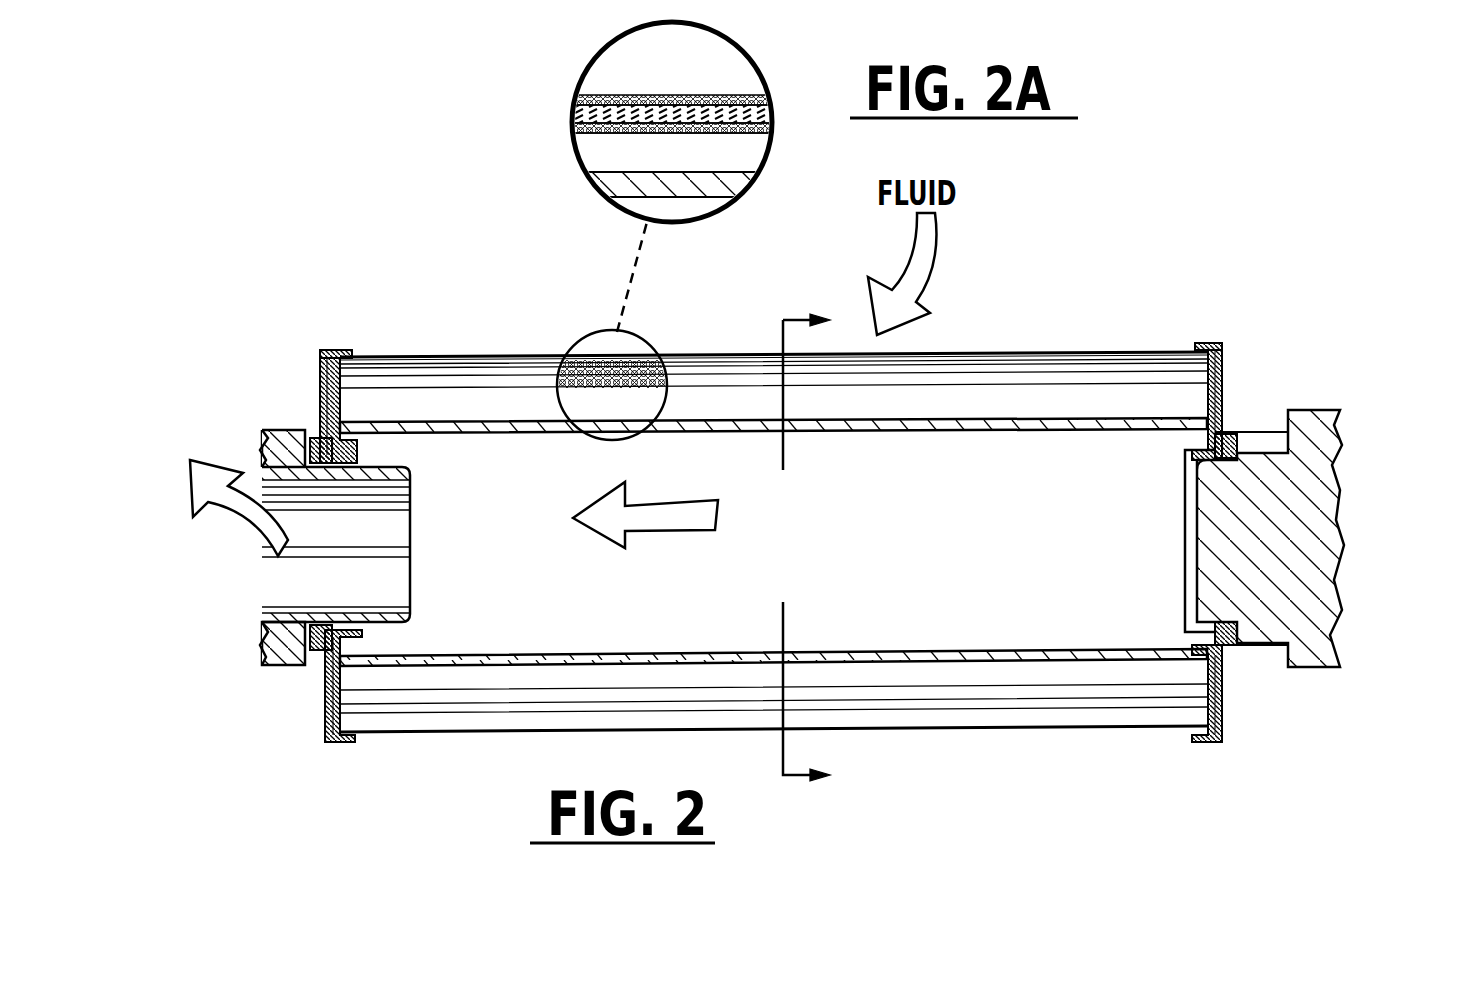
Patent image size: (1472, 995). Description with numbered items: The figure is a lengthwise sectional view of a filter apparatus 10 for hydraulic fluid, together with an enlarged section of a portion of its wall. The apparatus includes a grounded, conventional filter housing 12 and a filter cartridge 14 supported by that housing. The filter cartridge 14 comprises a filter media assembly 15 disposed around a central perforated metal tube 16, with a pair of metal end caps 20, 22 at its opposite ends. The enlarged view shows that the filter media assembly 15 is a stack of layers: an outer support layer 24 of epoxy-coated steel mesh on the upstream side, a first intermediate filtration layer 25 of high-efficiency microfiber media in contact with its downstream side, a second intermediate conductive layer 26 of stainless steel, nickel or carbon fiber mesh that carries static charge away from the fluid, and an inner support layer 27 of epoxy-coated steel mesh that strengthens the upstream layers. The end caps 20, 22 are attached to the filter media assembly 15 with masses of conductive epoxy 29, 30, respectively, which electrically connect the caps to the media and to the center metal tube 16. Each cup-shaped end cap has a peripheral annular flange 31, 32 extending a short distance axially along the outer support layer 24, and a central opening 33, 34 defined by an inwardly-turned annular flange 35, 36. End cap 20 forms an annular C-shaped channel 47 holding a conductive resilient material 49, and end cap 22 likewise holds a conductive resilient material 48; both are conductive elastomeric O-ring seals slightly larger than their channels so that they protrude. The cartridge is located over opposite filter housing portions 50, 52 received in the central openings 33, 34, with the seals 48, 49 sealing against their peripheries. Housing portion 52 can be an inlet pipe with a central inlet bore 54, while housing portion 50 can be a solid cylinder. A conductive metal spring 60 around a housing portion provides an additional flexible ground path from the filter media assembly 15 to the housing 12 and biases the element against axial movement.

In FIG. 2, the filter apparatus 10 is at (1018, 287).
In FIG. 2, the filter housing 12 is at (1355, 640).
In FIG. 2, the filter cartridge 14 is at (533, 354).
In FIG. 2, the filter media assembly 15 is at (735, 354).
In FIG. 2, the central perforated metal tube 16 is at (845, 432).
In FIG. 2A, the central perforated metal tube 16 is at (690, 185).
In FIG. 2, the end cap 20 is at (1224, 358).
In FIG. 2, the end cap 22 is at (322, 352).
In FIG. 2A, the outer support layer 24 is at (600, 97).
In FIG. 2A, the first intermediate filtration layer 25 is at (768, 103).
In FIG. 2A, the second intermediate conductive layer 26 is at (585, 130).
In FIG. 2A, the inner support layer 27 is at (712, 130).
In FIG. 2, the conductive epoxy 29 is at (1195, 397).
In FIG. 2, the conductive epoxy 30 is at (340, 395).
In FIG. 2, the peripheral annular flange 31 is at (1195, 350).
In FIG. 2, the peripheral annular flange 32 is at (342, 354).
In FIG. 2, the central opening 33 is at (1183, 570).
In FIG. 2, the central opening 34 is at (370, 630).
In FIG. 2, the inwardly-turned annular flange 35 is at (1224, 440).
In FIG. 2, the inwardly-turned annular flange 36 is at (352, 440).
In FIG. 2, the annular channel 47 is at (1205, 642).
In FIG. 2, the conductive resilient material 48 is at (322, 633).
In FIG. 2, the conductive resilient material 49 is at (1218, 466).
In FIG. 2, the filter housing portion 50 is at (1345, 505).
In FIG. 2, the filter housing portion 52 is at (262, 648).
In FIG. 2, the central inlet bore 54 is at (310, 573).
In FIG. 2, the conductive metal spring 60 is at (1240, 646).